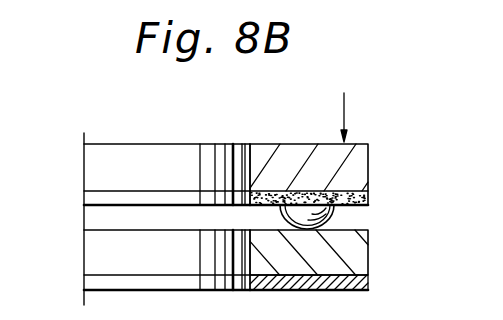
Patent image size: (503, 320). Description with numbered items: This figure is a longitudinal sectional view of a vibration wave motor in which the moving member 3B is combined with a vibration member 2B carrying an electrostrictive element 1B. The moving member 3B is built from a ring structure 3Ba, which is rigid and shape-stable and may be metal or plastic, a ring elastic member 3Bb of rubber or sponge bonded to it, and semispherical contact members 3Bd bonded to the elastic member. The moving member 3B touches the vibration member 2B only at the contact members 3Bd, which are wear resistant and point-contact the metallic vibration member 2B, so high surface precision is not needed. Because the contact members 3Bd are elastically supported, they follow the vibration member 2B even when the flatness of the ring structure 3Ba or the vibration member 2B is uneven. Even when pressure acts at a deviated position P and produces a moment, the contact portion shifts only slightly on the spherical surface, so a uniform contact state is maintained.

The deviated position P is at (343, 106).
The moving member 3B is at (357, 182).
The ring structure 3Ba is at (357, 170).
The ring elastic member 3Bb is at (367, 198).
The contact members 3Bd is at (335, 216).
The vibration member 2B is at (357, 256).
The electrostrictive element 1B is at (360, 279).